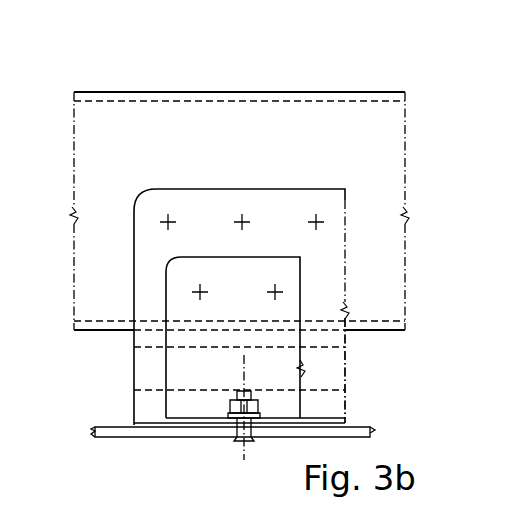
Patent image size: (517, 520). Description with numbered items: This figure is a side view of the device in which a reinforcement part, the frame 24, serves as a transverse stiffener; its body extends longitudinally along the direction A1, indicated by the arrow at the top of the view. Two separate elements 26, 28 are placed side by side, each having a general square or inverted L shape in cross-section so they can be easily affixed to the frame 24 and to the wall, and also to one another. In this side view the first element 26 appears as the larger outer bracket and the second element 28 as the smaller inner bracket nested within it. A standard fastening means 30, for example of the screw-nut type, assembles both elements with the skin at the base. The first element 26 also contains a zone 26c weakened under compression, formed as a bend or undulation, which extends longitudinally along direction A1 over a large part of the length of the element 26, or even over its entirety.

The frame 24 is at (176, 110).
The longitudinal direction A1 is at (378, 72).
The first element 26 is at (330, 203).
The zone weakened under compression 26c is at (335, 369).
The second element 28 is at (290, 289).
The fastening means 30 is at (232, 452).